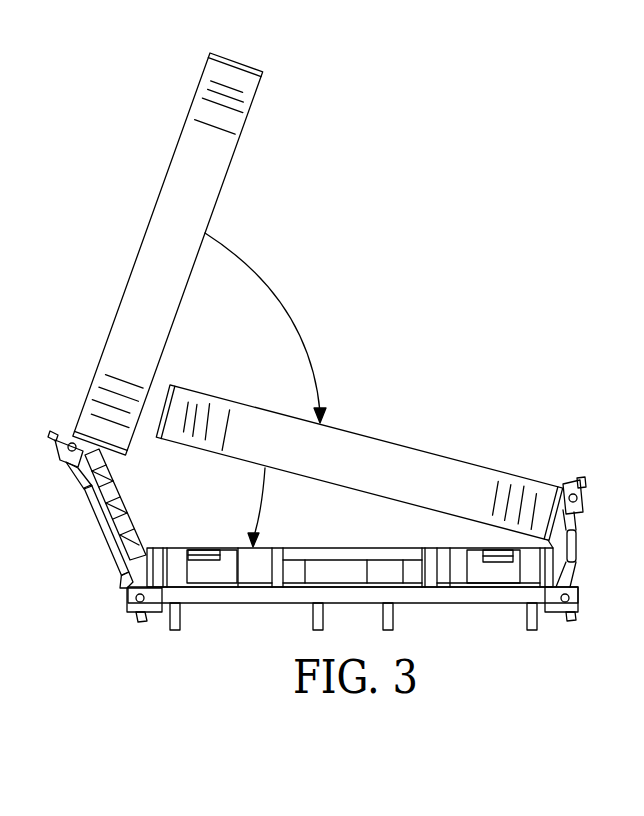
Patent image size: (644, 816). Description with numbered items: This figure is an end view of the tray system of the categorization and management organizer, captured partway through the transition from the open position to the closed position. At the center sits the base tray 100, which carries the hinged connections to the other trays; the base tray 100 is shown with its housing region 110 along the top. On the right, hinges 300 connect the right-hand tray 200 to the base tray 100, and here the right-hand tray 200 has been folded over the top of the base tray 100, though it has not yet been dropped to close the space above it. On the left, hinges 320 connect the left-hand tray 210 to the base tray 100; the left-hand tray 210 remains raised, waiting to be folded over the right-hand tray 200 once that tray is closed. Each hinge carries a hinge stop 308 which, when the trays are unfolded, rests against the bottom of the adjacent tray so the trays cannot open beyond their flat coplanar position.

The left-hand tray 210 is at (165, 178).
The right-hand tray 200 is at (398, 443).
The base tray 100 is at (493, 605).
The housing 110 is at (300, 595).
The hinges 320 is at (100, 524).
The hinges 300 is at (577, 553).
The hinge stop 308 is at (58, 437).